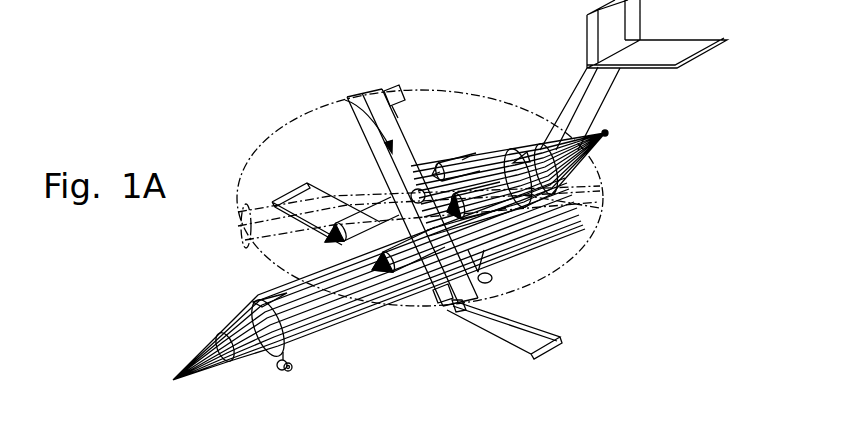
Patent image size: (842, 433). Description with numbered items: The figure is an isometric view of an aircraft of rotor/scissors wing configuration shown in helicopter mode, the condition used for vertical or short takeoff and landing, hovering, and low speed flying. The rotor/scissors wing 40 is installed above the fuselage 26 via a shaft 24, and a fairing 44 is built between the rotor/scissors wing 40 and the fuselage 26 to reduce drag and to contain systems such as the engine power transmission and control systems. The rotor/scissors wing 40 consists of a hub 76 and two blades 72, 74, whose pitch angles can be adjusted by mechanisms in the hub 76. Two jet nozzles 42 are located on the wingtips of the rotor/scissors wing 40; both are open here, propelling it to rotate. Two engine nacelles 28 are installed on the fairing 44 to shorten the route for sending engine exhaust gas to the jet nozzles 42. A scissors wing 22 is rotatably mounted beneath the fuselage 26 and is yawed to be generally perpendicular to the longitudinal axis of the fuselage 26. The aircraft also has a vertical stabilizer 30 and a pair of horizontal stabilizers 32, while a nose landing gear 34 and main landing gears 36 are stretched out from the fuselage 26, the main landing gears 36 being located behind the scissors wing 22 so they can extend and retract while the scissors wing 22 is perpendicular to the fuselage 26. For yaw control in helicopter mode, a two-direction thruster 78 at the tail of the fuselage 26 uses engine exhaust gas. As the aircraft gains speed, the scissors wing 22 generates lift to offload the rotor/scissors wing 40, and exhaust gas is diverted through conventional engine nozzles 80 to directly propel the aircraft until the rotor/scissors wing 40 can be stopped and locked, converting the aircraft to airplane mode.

The scissors wing 22 is at (510, 320).
The shaft 24 is at (404, 200).
The fuselage 26 is at (315, 323).
The engine nacelle 28 is at (488, 222).
The vertical stabilizer 30 is at (597, 87).
The horizontal stabilizer 32 is at (683, 50).
The nose landing gear 34 is at (285, 371).
The main landing gear 36 is at (488, 280).
The rotor/scissors wing 40 is at (345, 100).
The jet nozzle 42 is at (389, 96).
The fairing 44 is at (333, 257).
The blade 72 is at (372, 108).
The blade 74 is at (468, 288).
The hub 76 is at (412, 188).
The two-direction thruster 78 is at (608, 134).
The conventional engine nozzle 80 is at (462, 160).